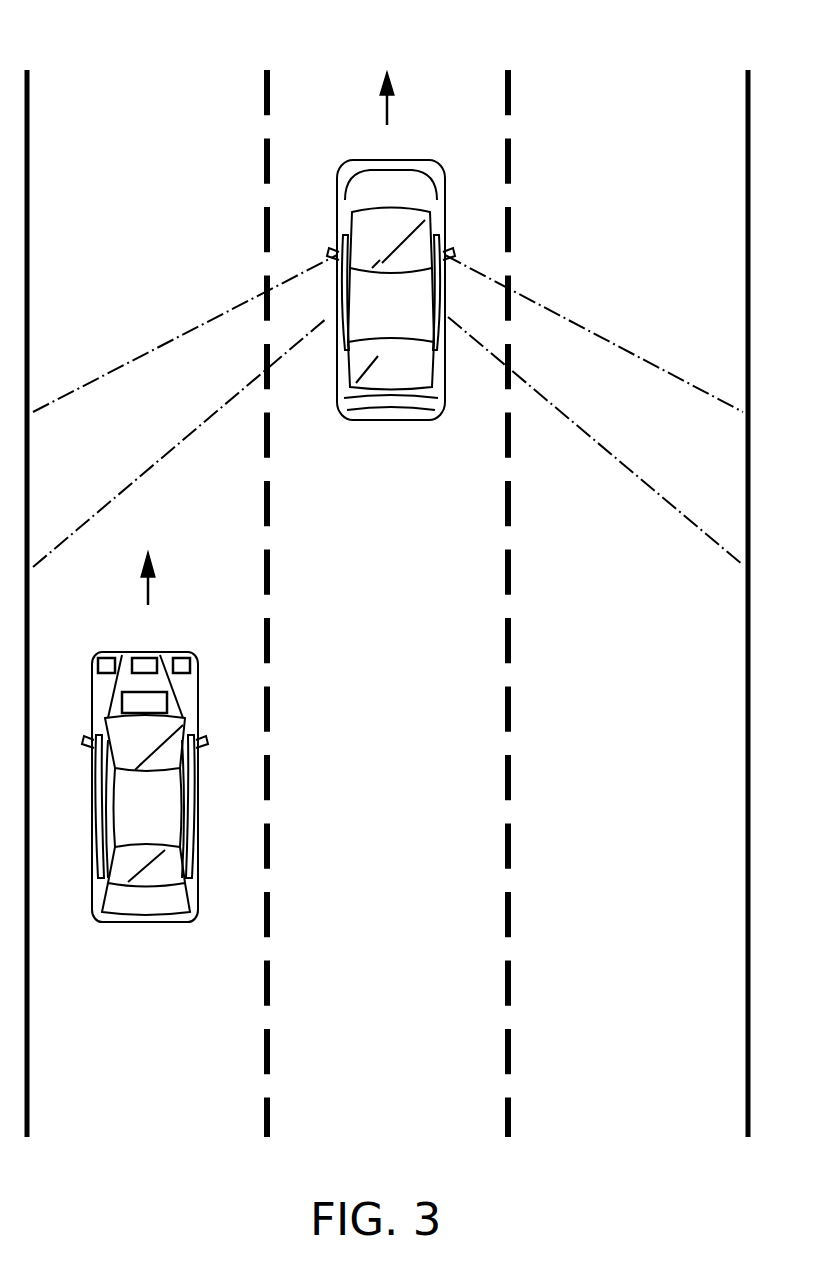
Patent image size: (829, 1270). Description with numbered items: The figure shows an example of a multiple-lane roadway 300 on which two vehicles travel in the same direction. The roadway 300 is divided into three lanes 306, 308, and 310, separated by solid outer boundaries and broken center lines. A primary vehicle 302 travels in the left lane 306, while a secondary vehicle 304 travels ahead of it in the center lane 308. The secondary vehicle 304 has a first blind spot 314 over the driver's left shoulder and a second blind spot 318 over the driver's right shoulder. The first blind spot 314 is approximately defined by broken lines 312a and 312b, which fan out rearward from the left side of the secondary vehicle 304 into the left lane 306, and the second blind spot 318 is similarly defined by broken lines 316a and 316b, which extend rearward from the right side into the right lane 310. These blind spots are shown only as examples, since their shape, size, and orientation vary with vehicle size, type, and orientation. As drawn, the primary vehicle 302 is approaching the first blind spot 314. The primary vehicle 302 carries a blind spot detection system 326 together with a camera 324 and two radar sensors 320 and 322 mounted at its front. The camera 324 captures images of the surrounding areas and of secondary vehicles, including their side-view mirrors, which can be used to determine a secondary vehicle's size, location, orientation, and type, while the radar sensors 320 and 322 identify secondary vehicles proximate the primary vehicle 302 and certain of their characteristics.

The multiple-lane roadway 300 is at (628, 62).
The primary vehicle 302 is at (166, 803).
The secondary vehicle 304 is at (410, 311).
The lane 306 is at (166, 1126).
The lane 308 is at (410, 1126).
The lane 310 is at (650, 1126).
The broken line 312a is at (220, 322).
The broken line 312b is at (155, 462).
The first blind spot 314 is at (158, 424).
The broken line 316a is at (592, 340).
The broken line 316b is at (619, 462).
The second blind spot 318 is at (656, 424).
The radar sensor 320 is at (108, 656).
The radar sensor 322 is at (180, 656).
The camera 324 is at (138, 656).
The blind spot detection system 326 is at (135, 700).